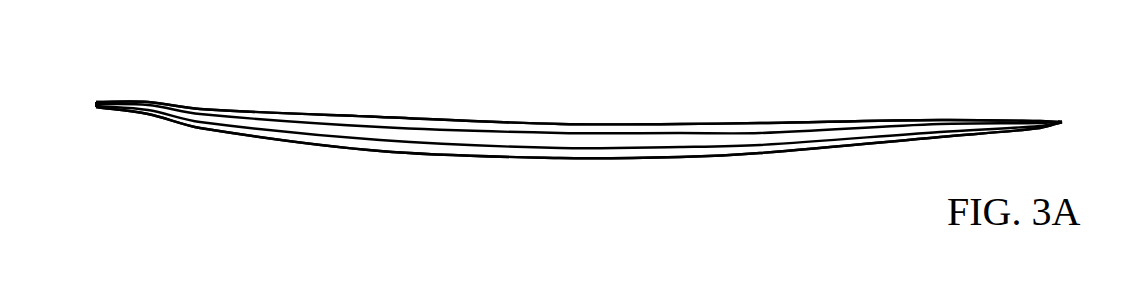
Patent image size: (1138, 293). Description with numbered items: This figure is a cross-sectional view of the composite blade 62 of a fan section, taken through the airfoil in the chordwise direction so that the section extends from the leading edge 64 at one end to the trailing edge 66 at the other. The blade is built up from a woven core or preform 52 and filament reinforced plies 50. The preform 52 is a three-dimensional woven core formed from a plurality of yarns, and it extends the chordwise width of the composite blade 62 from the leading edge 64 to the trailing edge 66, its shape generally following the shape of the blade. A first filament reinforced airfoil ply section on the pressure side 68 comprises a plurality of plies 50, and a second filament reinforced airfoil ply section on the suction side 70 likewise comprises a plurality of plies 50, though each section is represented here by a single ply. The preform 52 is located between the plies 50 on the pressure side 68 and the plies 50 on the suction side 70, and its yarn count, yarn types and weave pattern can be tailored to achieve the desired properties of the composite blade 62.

The plies 50 is at (617, 130).
The preform 52 is at (482, 138).
The composite blade 62 is at (370, 105).
The leading edge 64 is at (1062, 122).
The trailing edge 66 is at (96, 103).
The pressure side 68 is at (813, 124).
The suction side 70 is at (827, 148).